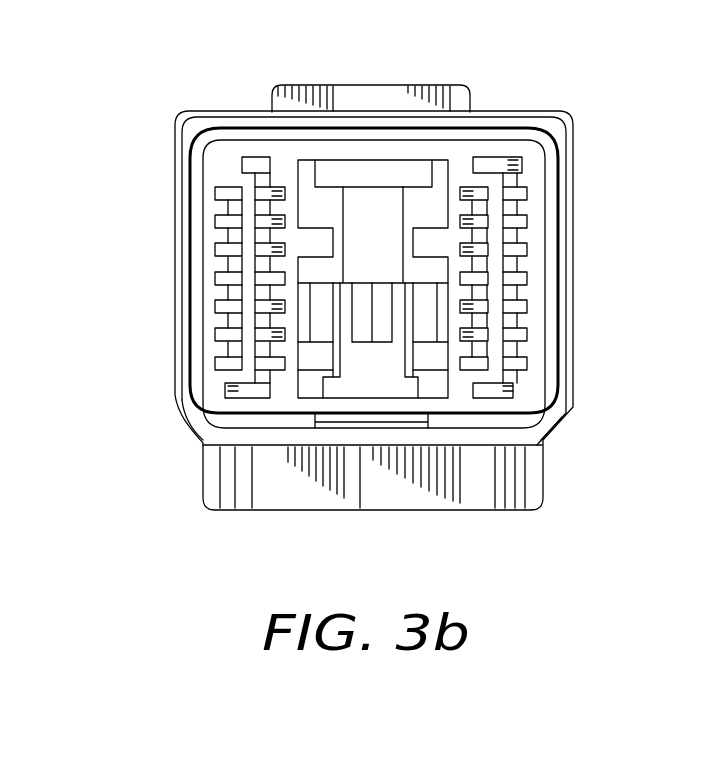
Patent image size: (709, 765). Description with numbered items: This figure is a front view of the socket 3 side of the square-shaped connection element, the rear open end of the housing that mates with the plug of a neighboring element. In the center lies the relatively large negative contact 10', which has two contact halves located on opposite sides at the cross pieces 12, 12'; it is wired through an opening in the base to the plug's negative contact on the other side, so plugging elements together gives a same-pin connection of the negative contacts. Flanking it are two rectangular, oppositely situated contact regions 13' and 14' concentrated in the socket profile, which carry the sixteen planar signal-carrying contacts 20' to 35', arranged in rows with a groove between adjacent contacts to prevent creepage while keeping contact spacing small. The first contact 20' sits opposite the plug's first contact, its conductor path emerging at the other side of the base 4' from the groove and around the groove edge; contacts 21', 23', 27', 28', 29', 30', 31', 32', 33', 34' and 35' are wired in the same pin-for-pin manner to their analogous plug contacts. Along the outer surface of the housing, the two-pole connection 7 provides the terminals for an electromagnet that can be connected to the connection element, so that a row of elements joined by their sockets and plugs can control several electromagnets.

The socket 3 is at (378, 63).
The other side of the base 4' is at (372, 475).
The two-pole connection 7 is at (360, 445).
The negative contact 10' is at (377, 219).
The cross piece 12 is at (235, 247).
The cross piece 12' is at (555, 288).
The contact region 13' is at (396, 314).
The contact region 14' is at (351, 320).
The contact 20' is at (521, 162).
The contact 21' is at (579, 341).
The contact 23' is at (574, 376).
The contact 27' is at (488, 123).
The contact 28' is at (261, 127).
The contact 29' is at (166, 160).
The contact 30' is at (166, 205).
The contact 31' is at (171, 288).
The contact 32' is at (176, 349).
The contact 33' is at (195, 394).
The contact 34' is at (170, 313).
The contact 35' is at (206, 172).